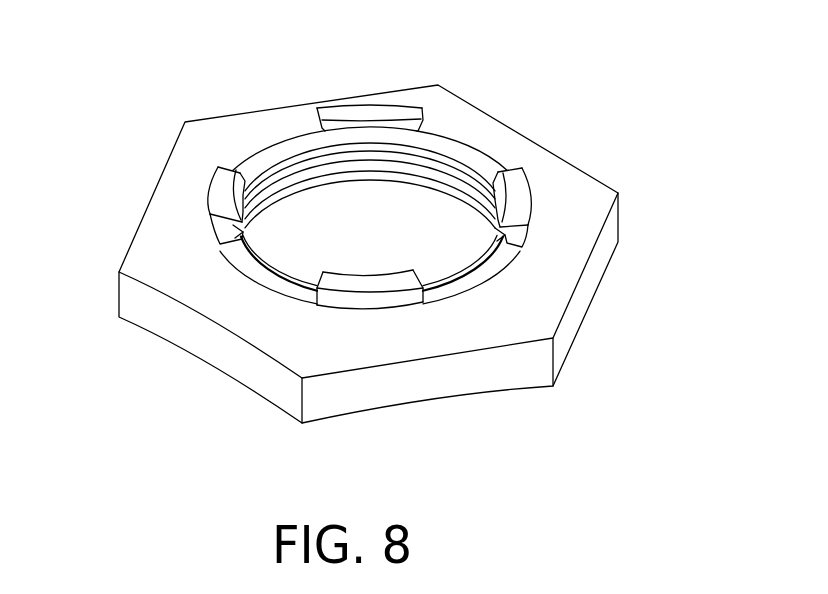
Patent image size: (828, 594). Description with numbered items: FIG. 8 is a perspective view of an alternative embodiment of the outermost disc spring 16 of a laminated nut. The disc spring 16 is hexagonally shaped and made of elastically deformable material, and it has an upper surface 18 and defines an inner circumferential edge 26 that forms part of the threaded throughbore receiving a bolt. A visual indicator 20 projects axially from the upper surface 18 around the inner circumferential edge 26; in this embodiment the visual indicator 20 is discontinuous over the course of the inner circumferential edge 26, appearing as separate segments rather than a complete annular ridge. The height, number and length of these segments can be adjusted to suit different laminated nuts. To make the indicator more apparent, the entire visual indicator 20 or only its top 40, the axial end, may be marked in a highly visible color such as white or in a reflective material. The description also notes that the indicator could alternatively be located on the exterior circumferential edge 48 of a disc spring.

The outermost disc spring 16 is at (394, 236).
The upper surface 18 is at (182, 200).
The visual indicator 20 is at (527, 233).
The inner circumferential edge 26 is at (477, 157).
The top 40 is at (376, 108).
The exterior circumferential edge 48 is at (212, 340).